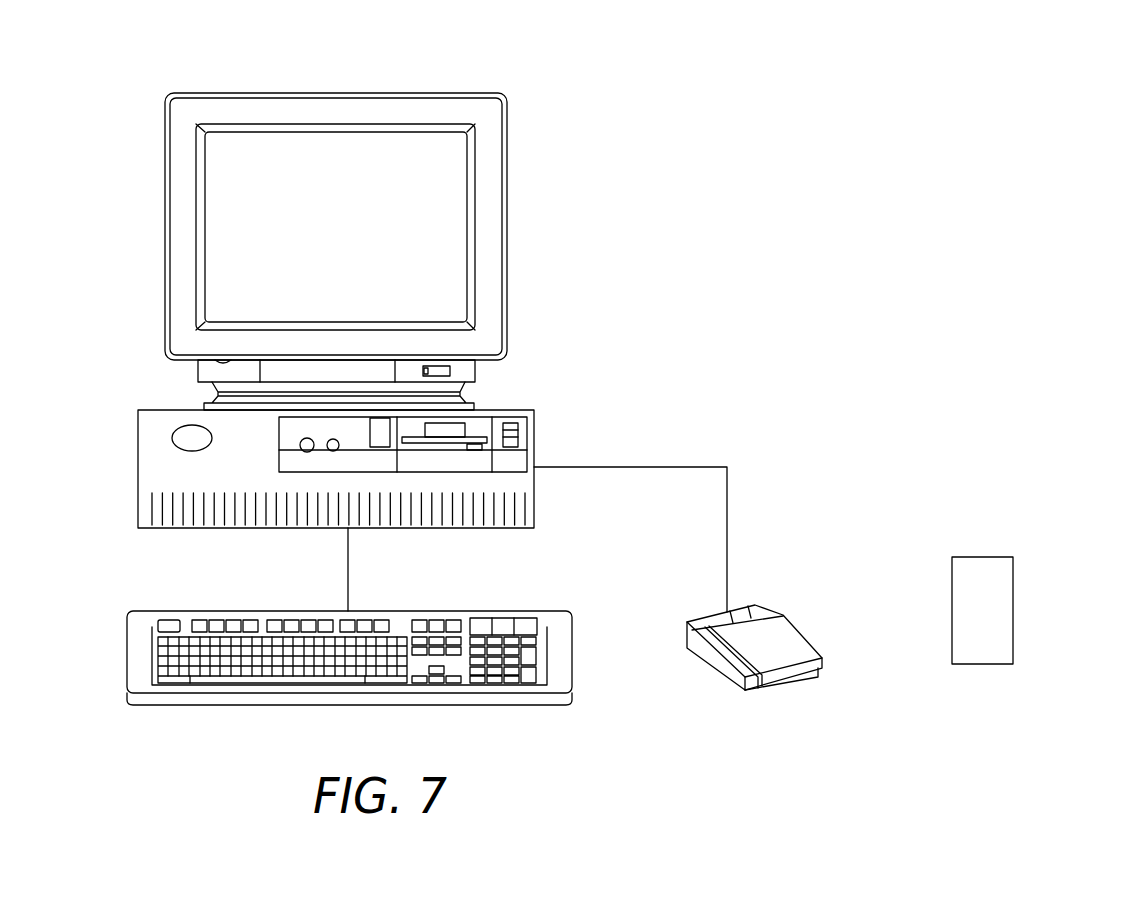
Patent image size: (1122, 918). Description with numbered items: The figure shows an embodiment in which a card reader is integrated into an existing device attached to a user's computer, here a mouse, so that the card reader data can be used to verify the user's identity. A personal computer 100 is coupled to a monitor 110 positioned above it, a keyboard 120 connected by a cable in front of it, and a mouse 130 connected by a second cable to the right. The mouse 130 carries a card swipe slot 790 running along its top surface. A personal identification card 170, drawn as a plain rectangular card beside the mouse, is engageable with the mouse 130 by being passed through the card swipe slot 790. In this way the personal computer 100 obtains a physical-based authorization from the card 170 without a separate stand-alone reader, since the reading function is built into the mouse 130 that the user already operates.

The personal computer 100 is at (535, 428).
The monitor 110 is at (428, 93).
The keyboard 120 is at (440, 611).
The mouse 130 is at (767, 646).
The personal identification card 170 is at (977, 557).
The card swipe slot 790 is at (730, 642).